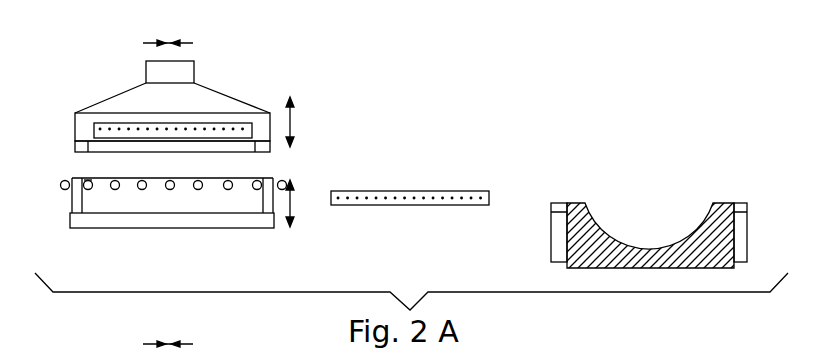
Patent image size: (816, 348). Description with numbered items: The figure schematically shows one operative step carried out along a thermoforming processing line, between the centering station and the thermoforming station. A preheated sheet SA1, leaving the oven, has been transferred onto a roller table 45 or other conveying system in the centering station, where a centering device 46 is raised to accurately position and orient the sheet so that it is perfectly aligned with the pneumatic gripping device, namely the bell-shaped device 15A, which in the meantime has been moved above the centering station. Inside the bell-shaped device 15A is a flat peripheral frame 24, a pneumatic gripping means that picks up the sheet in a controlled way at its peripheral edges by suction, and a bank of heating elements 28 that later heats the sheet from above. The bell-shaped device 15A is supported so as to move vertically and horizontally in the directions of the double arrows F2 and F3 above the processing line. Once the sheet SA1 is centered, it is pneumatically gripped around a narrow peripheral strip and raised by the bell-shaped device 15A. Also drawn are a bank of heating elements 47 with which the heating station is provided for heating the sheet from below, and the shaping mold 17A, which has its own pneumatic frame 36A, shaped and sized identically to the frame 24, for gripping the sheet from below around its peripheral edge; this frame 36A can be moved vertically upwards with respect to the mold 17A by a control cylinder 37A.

The double arrow F2 is at (162, 41).
The bell-shaped device 15A is at (212, 98).
The flat peripheral frame 24 is at (77, 138).
The bank of heating elements 28 is at (118, 128).
The double arrow F3 is at (292, 121).
The roller table 45 is at (113, 180).
The sheet SA1 is at (85, 178).
The centering device 46 is at (137, 218).
The bank of heating elements 47 is at (368, 199).
The mold 17A is at (722, 211).
The pneumatic frame 36A is at (746, 208).
The control cylinder 37A is at (742, 236).